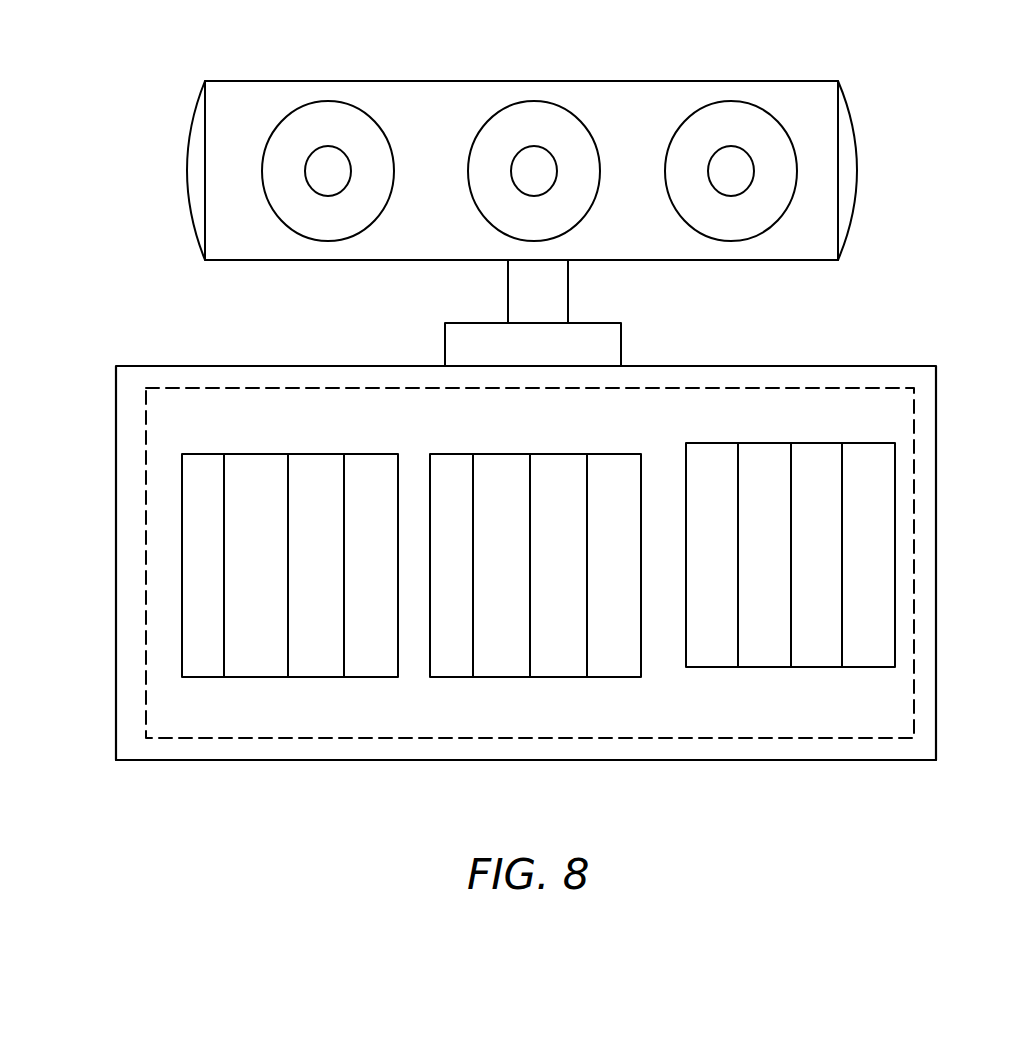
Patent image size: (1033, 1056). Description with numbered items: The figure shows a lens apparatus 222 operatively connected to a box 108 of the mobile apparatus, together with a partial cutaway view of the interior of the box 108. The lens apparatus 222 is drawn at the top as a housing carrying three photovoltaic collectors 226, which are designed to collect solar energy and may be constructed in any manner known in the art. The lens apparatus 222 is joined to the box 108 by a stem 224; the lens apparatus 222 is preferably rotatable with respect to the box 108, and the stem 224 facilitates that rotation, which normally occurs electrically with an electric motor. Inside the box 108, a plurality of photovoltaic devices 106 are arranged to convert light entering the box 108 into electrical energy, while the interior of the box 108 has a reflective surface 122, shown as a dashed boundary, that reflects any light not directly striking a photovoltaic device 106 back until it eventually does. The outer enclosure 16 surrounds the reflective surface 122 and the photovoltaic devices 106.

The housing 16 is at (130, 385).
The photovoltaic device 106 is at (200, 531).
The box 108 is at (116, 663).
The reflective surface 122 is at (867, 388).
The lens apparatus 222 is at (522, 80).
The stem 224 is at (532, 287).
The photovoltaic collector 226 is at (732, 123).